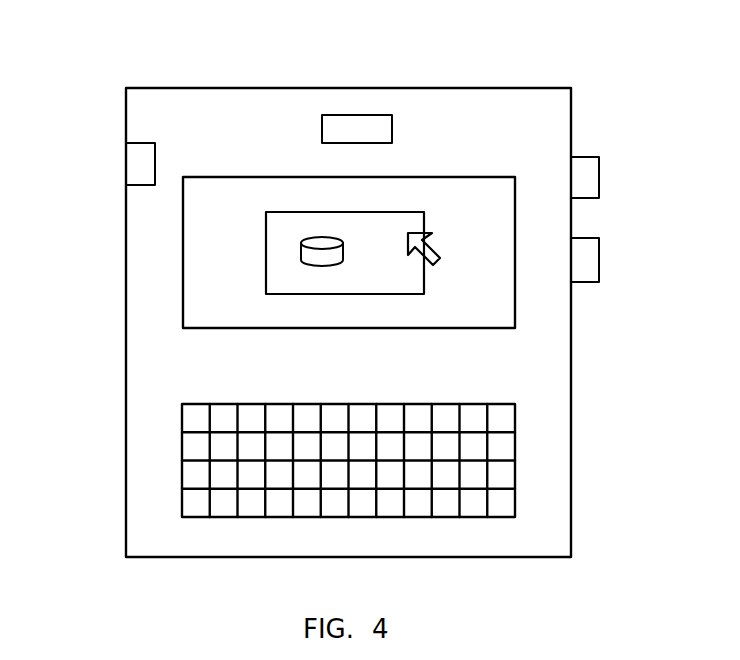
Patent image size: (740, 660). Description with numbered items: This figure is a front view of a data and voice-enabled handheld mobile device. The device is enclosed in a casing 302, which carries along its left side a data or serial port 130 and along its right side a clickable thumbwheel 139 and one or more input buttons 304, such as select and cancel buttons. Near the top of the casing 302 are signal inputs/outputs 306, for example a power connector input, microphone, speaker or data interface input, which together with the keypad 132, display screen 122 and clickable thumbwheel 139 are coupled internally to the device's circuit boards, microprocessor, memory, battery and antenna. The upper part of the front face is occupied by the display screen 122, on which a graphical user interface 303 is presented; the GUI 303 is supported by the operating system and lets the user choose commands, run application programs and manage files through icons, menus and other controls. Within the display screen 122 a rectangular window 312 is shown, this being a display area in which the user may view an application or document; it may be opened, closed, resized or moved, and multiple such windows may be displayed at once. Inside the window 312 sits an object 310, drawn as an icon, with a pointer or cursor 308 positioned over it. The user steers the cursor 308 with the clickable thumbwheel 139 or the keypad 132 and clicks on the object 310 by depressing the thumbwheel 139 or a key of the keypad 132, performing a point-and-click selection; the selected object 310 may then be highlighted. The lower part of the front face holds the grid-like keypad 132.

The casing 302 is at (240, 117).
The data or serial port 130 is at (140, 160).
The signal inputs/outputs 306 is at (362, 115).
The clickable thumbwheel 139 is at (583, 178).
The input buttons 304 is at (583, 265).
The display screen 122 is at (182, 214).
The graphical user interface 303 is at (197, 240).
The window 312 is at (390, 225).
The object 310 is at (300, 250).
The pointer or cursor 308 is at (440, 263).
The keypad 132 is at (516, 445).